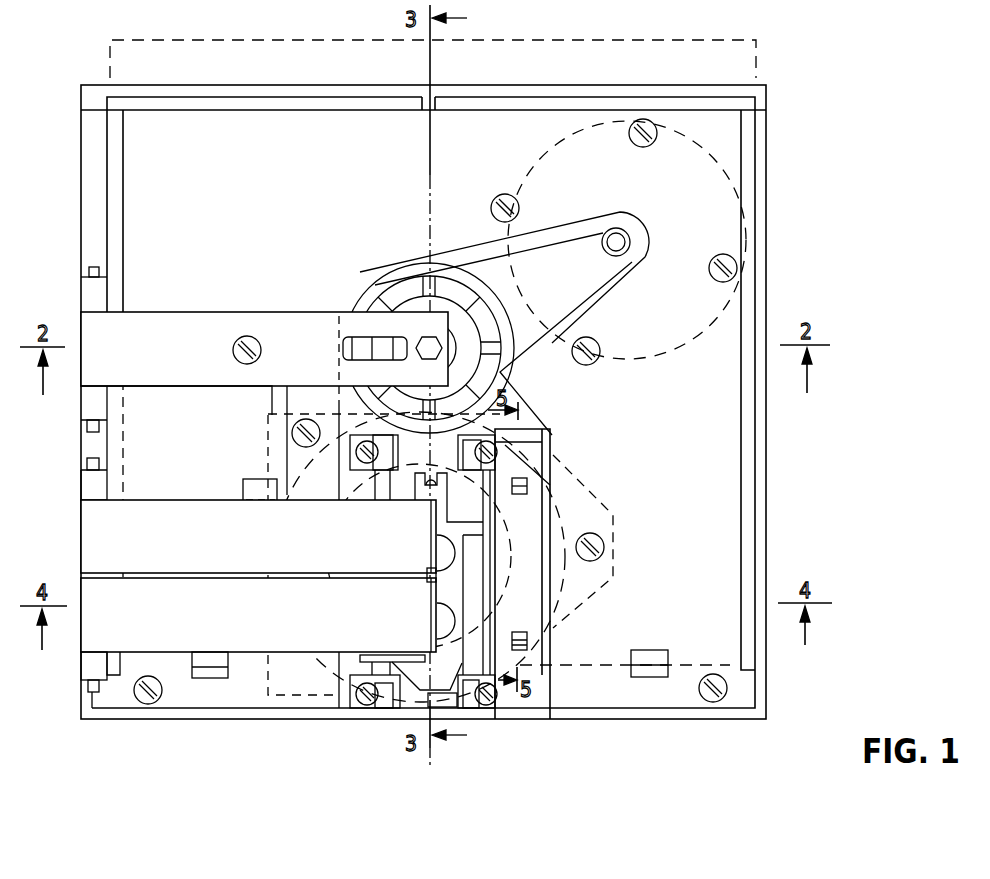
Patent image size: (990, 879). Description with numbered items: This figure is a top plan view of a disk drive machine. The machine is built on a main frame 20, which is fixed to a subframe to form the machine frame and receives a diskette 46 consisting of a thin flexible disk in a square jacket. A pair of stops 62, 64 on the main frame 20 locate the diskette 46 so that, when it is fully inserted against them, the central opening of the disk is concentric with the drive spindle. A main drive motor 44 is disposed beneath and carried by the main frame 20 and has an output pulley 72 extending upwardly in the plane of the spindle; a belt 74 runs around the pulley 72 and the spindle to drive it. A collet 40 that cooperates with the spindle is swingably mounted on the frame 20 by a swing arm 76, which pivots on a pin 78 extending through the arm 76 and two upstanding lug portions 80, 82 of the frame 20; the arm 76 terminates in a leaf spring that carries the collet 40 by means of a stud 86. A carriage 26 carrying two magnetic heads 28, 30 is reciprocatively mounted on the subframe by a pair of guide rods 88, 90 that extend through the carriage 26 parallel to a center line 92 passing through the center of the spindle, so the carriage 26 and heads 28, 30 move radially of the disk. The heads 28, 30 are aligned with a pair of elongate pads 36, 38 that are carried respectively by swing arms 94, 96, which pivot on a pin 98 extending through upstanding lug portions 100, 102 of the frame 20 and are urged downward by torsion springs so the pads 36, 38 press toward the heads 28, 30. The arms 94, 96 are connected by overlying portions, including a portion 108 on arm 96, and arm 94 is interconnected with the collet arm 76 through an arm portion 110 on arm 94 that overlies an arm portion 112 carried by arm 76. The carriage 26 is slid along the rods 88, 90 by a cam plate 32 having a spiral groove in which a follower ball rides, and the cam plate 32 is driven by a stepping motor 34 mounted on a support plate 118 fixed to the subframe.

The main frame 20 is at (766, 210).
The carriage 26 is at (437, 513).
The magnetic head 28 is at (444, 548).
The magnetic head 30 is at (444, 624).
The cam plate 32 is at (274, 556).
The motor 34 is at (292, 596).
The elongate pad 36 is at (450, 486).
The elongate pad 38 is at (530, 605).
The collet 40 is at (374, 266).
The main drive motor 44 is at (537, 337).
The diskette 46 is at (762, 47).
The stop 62 is at (668, 657).
The stop 64 is at (212, 678).
The output pulley 72 is at (602, 246).
The belt 74 is at (603, 284).
The swing arm 76 is at (185, 360).
The pin 78 is at (93, 266).
The lug portion 82 is at (86, 282).
The lug portion 80 is at (86, 404).
The stud 86 is at (425, 338).
The guide rod 88 is at (372, 484).
The guide rod 90 is at (540, 432).
The center line 92 is at (442, 761).
The swing arm 94 is at (192, 548).
The swing arm 96 is at (192, 623).
The pin 98 is at (90, 693).
The lug portion 100 is at (81, 486).
The lug portion 102 is at (85, 671).
The portion 108 is at (428, 573).
The arm portion 110 is at (243, 484).
The arm portion 112 is at (272, 401).
The support plate 118 is at (620, 535).